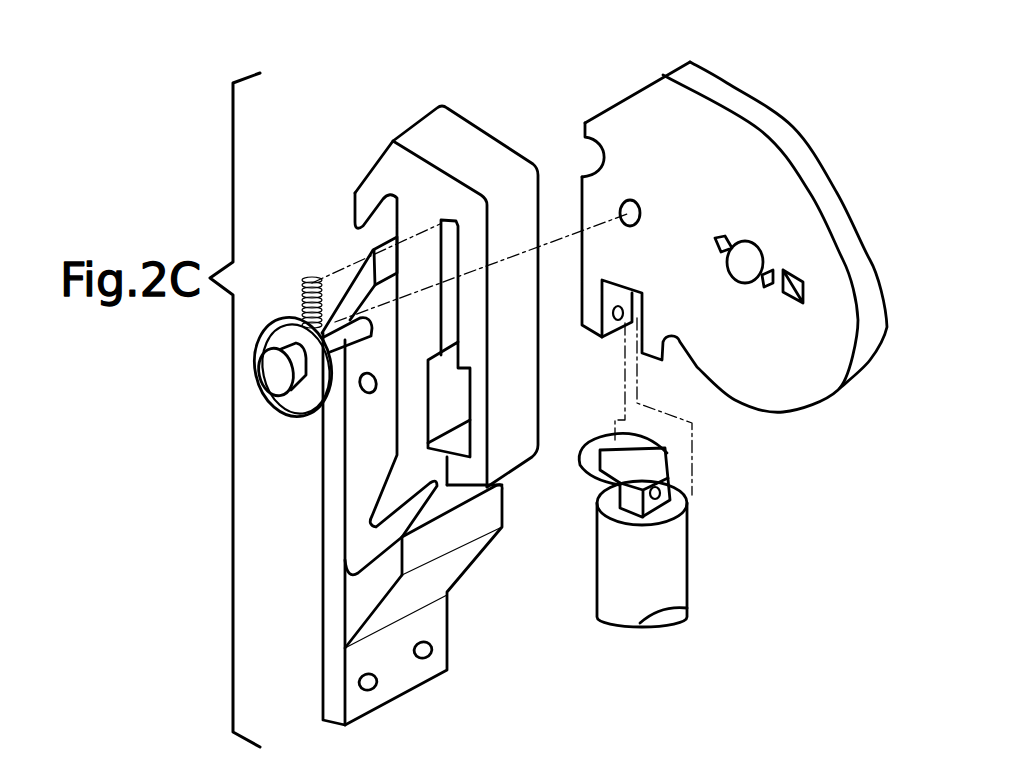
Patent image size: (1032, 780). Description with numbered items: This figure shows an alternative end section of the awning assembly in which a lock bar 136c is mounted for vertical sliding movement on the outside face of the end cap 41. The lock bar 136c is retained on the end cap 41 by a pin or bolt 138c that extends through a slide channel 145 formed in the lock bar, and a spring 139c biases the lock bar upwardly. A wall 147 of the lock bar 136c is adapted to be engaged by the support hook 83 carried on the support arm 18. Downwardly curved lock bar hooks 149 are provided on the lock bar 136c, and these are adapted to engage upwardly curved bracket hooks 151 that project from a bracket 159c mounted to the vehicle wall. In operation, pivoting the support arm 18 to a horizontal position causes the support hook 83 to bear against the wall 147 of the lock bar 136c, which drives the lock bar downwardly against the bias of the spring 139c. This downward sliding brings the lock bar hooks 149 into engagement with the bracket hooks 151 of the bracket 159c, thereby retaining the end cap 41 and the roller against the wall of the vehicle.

The lock bar 136c is at (453, 135).
The slide channel 145 is at (447, 252).
The wall 147 is at (457, 446).
The lock bar hooks 149 is at (372, 167).
The bracket hooks 151 is at (358, 273).
The bracket 159c is at (328, 535).
The spring 139c is at (310, 295).
The pin or bolt 138c is at (285, 345).
The end cap 41 is at (742, 100).
The support hook 83 is at (668, 458).
The support arm 18 is at (673, 563).